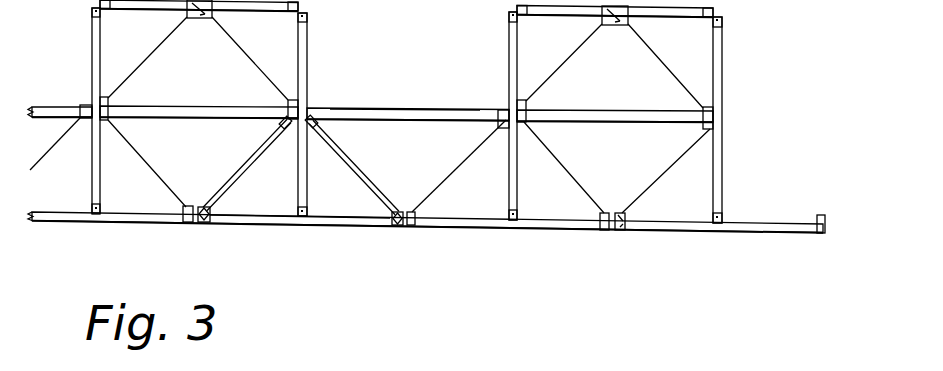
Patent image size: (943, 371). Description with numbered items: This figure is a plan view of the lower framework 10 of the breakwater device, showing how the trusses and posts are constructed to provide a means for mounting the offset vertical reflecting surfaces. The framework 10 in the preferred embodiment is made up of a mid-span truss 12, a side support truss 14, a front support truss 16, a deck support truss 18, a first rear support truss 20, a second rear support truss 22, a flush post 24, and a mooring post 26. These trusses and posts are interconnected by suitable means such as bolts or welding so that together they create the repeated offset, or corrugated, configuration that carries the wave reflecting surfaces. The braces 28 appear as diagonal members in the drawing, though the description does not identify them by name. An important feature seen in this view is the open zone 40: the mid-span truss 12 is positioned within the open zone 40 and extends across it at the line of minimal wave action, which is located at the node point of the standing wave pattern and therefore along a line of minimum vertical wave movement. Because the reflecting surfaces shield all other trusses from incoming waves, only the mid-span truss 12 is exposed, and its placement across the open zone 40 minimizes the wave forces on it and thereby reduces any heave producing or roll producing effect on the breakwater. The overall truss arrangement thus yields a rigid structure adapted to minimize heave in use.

The framework 10 is at (748, 52).
The mid-span truss 12 is at (53, 106).
The side support truss 14 is at (92, 52).
The front support truss 16 is at (259, 11).
The deck support truss 18 is at (199, 106).
The first rear support truss 20 is at (48, 222).
The second rear support truss 22 is at (273, 226).
The flush post 24 is at (197, 225).
The mooring post 26 is at (403, 231).
The diagonal brace 28 is at (242, 163).
The open zone 40 is at (415, 67).